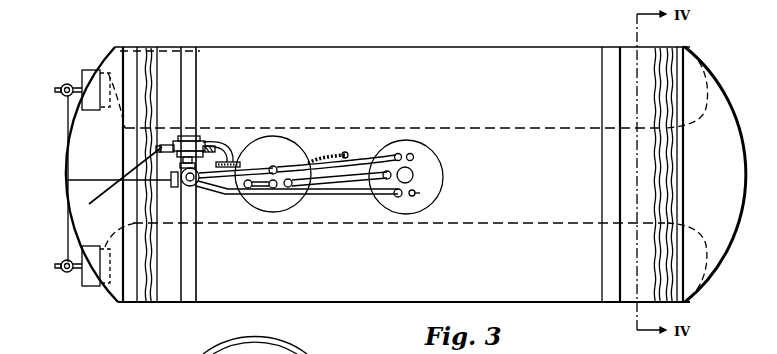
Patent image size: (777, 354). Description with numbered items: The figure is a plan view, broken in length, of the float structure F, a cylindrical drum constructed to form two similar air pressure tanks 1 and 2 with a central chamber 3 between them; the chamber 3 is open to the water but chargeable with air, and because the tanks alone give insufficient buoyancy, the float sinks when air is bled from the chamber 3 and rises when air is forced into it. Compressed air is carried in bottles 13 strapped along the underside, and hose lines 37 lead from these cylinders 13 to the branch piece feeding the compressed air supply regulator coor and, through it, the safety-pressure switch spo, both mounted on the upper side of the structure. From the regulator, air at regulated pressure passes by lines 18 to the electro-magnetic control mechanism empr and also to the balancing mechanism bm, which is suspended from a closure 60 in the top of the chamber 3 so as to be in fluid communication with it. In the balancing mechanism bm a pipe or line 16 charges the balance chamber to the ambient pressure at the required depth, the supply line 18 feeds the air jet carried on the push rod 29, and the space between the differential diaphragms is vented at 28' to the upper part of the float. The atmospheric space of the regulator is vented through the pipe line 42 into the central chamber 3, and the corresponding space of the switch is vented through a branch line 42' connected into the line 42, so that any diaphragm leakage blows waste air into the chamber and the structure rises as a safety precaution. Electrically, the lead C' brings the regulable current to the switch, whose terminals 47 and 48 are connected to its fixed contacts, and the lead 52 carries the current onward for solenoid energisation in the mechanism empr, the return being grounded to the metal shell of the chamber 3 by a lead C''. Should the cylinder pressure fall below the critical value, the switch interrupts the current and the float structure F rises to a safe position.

The air pressure tank 1 is at (712, 124).
The air pressure tank 2 is at (155, 298).
The chamber 3 is at (535, 78).
The bottles 13 is at (110, 52).
The pipe or line 16 is at (387, 237).
The pipe or line 18 is at (262, 167).
The vent 28' is at (446, 197).
The push rod 29 is at (398, 155).
The hose lines 37 is at (33, 241).
The pipe line 42 is at (297, 202).
The branch line 42' is at (255, 115).
The terminal 47 is at (162, 154).
The terminal 48 is at (216, 137).
The lead 52 is at (242, 161).
The closure 60 is at (440, 175).
The float structure F is at (392, 46).
The lead C' is at (98, 161).
The lead C'' is at (335, 135).
The safety-pressure switch spo is at (199, 136).
The electro-magnetic control mechanism empr is at (287, 150).
The compressed air supply regulator coor is at (196, 190).
The balancing mechanism bm is at (422, 148).